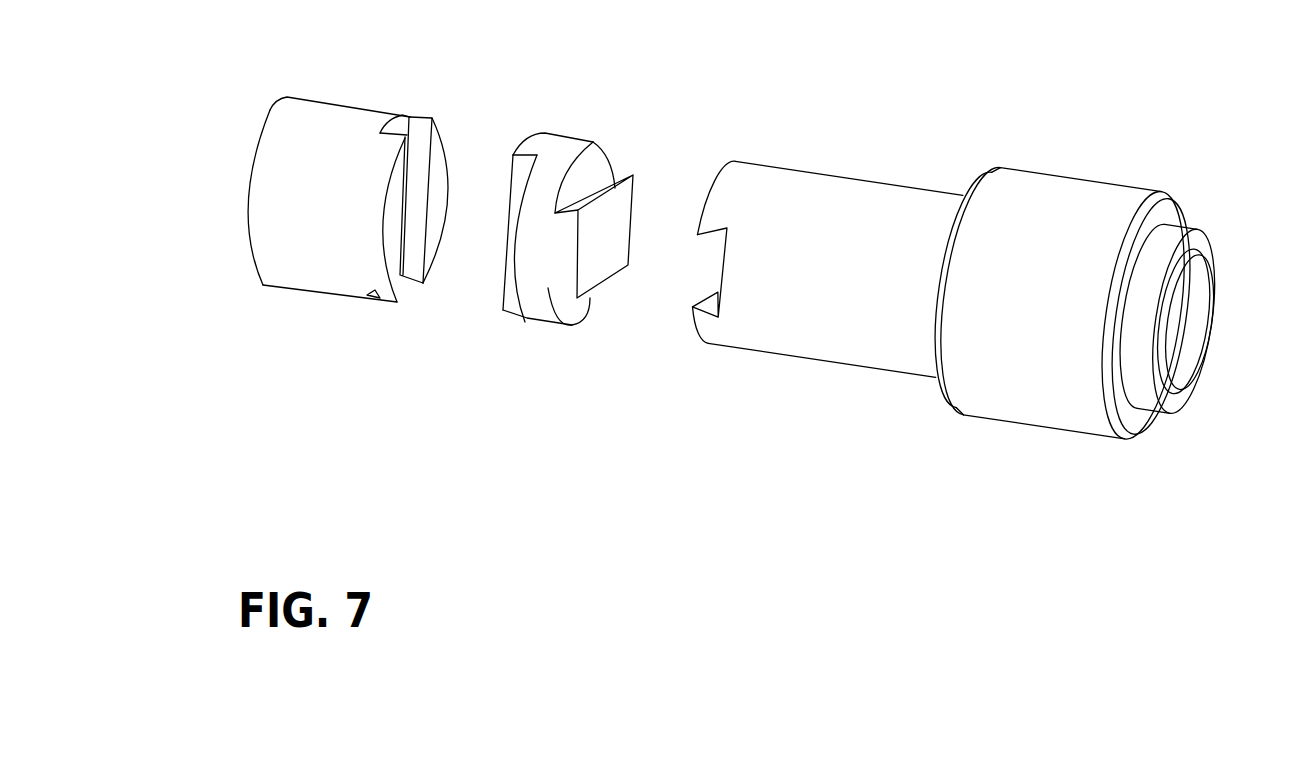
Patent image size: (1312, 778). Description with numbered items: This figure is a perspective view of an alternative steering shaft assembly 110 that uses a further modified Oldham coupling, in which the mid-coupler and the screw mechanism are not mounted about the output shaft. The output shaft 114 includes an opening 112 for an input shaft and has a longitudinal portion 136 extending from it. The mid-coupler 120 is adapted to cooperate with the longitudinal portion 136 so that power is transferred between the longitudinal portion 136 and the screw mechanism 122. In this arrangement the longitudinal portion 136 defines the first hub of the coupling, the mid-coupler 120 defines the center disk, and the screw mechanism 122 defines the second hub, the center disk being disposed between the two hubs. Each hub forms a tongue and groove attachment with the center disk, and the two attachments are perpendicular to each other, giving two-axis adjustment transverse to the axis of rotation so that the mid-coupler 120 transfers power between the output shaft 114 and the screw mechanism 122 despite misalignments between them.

The steering shaft assembly 110 is at (983, 328).
The opening 112 is at (1183, 338).
The output shaft 114 is at (1090, 386).
The mid-coupler 120 is at (560, 147).
The screw mechanism 122 is at (343, 115).
The longitudinal portion 136 is at (823, 188).